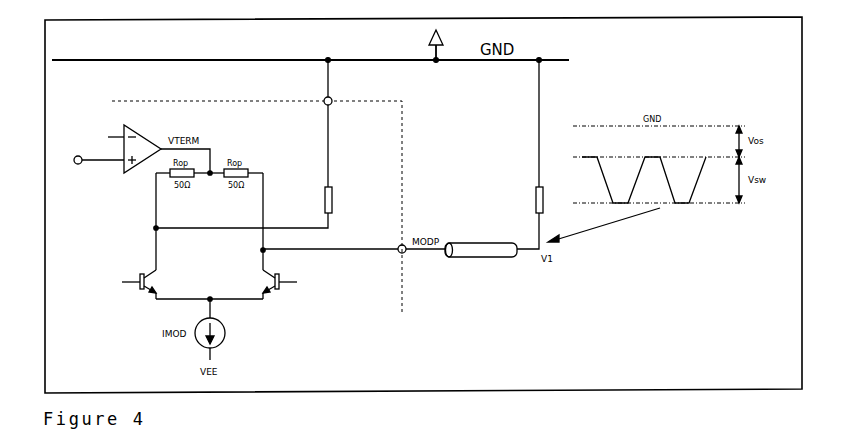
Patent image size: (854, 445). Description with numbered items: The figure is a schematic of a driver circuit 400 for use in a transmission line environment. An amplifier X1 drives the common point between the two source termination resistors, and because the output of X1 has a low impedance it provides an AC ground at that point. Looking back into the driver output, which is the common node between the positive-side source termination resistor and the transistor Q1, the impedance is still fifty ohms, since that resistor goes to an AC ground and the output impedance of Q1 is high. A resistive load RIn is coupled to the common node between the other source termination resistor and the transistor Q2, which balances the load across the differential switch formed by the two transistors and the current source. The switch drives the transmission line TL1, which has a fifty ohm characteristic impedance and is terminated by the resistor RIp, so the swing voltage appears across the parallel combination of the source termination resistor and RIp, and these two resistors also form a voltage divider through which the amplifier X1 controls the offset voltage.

The driver circuit 400 is at (402, 148).
The amplifier X1 is at (117, 148).
The transistor Q1 is at (280, 282).
The transistor Q2 is at (139, 282).
The transmission line TL1 is at (481, 258).
The resistive load RIn is at (253, 144).
The termination resistor RIp is at (538, 154).